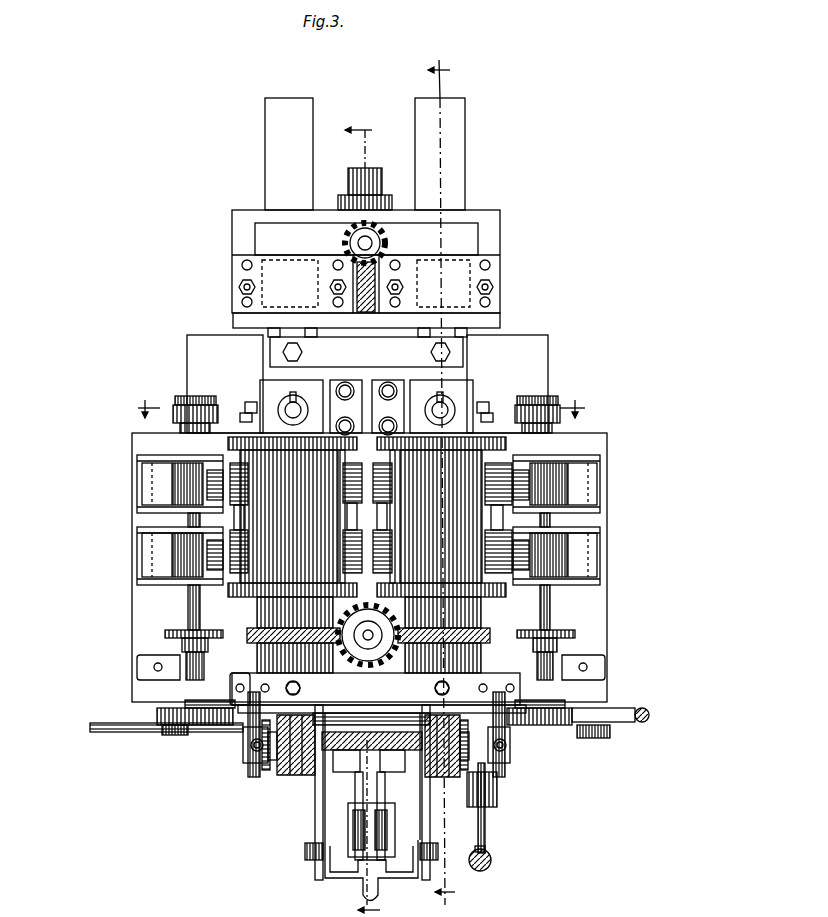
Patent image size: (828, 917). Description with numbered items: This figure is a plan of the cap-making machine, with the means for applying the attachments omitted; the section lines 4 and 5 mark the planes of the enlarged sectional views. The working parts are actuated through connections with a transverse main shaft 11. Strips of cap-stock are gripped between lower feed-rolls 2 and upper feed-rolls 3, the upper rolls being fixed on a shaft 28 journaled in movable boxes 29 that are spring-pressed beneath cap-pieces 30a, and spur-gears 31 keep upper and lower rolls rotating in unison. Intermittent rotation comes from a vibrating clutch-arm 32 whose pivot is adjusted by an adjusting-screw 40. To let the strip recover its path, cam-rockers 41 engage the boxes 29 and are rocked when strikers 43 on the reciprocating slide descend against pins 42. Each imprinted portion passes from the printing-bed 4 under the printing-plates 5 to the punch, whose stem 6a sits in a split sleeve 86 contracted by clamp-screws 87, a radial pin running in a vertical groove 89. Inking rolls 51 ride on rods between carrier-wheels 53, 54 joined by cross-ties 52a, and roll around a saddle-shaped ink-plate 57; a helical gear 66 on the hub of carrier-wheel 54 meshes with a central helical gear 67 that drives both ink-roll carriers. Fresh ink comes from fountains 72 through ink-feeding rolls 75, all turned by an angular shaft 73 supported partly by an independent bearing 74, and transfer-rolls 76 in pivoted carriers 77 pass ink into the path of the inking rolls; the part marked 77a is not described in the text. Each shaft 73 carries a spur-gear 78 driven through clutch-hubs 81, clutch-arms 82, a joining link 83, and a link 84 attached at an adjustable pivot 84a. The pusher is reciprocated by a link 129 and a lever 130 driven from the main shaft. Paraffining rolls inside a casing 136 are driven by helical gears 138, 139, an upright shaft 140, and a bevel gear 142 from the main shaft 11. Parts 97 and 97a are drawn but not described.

The lower feed-roll 2 is at (268, 765).
The upper feed-roll 3 is at (295, 773).
The printing-bed 4 is at (441, 475).
The printing-plate 5 is at (359, 409).
The stem of the punch 6a is at (405, 395).
The main shaft 11 is at (352, 172).
The shaft 28 is at (372, 794).
The box 29 is at (248, 752).
The cap-piece 30a is at (548, 794).
The spur-gear 31 is at (488, 795).
The clutch-arm 32 is at (486, 824).
The adjusting-screw 40 is at (490, 862).
The cam-rocker 41 is at (255, 767).
The pin 42 is at (265, 708).
The striker 43 is at (302, 692).
The inking roll 51 is at (238, 462).
The cross-tie 52a is at (445, 442).
The carrier-wheel 53 is at (248, 420).
The carrier-wheel 54 is at (272, 598).
The ink-plate 57 is at (258, 612).
The helical gear 66 is at (250, 642).
The helical gear 67 is at (380, 648).
The fountain 72 is at (135, 486).
The shaft 73 is at (188, 617).
The bearing 74 is at (182, 680).
The ink-feeding roll 75 is at (186, 468).
The transfer-roll 76 is at (216, 470).
The carrier 77 is at (145, 459).
The plate 77a is at (634, 522).
The spur-gear 78 is at (165, 634).
The clutch-hub 81 is at (215, 727).
The clutch-arm 82 is at (157, 712).
The link 83 is at (108, 732).
The link 84 is at (583, 722).
The pivot 84a is at (602, 730).
The sleeve 86 is at (288, 395).
The clamp-screw 87 is at (248, 402).
The vertical groove 89 is at (362, 395).
The plate 97 is at (187, 406).
The gear 97a is at (585, 394).
The link 129 is at (315, 835).
The lever 130 is at (373, 888).
The casing 136 is at (232, 268).
The helical gear 138 is at (368, 300).
The helical gear 139 is at (384, 246).
The upright shaft 140 is at (347, 246).
The bevel gear 142 is at (346, 205).